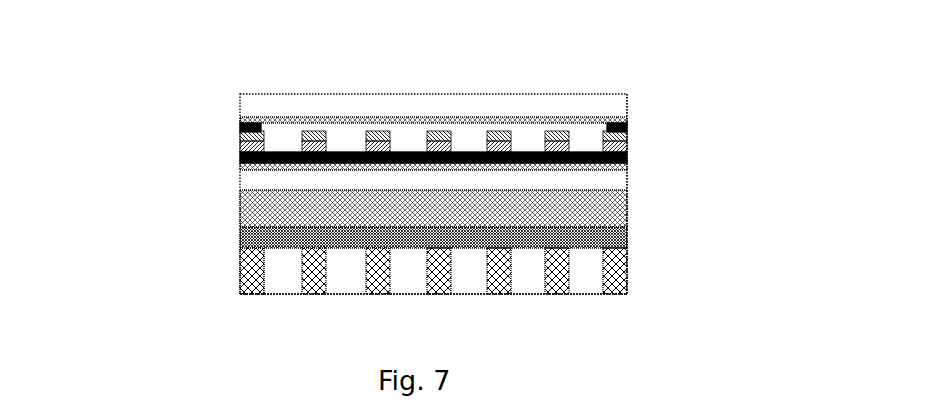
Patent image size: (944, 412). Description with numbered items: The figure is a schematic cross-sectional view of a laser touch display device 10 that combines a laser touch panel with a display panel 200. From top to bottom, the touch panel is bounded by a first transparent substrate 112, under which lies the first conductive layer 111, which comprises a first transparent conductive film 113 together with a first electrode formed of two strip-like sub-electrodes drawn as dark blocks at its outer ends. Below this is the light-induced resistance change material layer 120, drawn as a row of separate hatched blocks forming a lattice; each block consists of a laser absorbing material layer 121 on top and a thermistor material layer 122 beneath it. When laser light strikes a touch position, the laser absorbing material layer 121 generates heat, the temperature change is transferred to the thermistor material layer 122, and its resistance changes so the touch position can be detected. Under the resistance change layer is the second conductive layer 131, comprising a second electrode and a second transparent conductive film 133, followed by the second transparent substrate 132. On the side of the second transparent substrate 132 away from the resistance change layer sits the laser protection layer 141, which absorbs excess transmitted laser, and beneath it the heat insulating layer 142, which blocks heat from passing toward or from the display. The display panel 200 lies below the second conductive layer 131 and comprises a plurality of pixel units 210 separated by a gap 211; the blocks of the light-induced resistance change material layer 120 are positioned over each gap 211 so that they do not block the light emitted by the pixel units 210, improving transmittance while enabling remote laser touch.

The laser touch display device 10 is at (599, 80).
The first conductive layer 111 is at (347, 103).
The first transparent substrate 112 is at (665, 194).
The first transparent conductive film 113 is at (391, 98).
The light-induced resistance change material layer 120 is at (495, 155).
The laser absorbing material layer 121 is at (472, 145).
The thermistor material layer 122 is at (708, 145).
The second conductive layer 131 is at (347, 175).
The second transparent conductive film 133 is at (391, 180).
The second transparent substrate 132 is at (391, 202).
The laser protection layer 141 is at (391, 228).
The heat insulating layer 142 is at (391, 265).
The display panel 200 is at (366, 294).
The gap 211 is at (209, 281).
The pixel units 210 is at (148, 302).